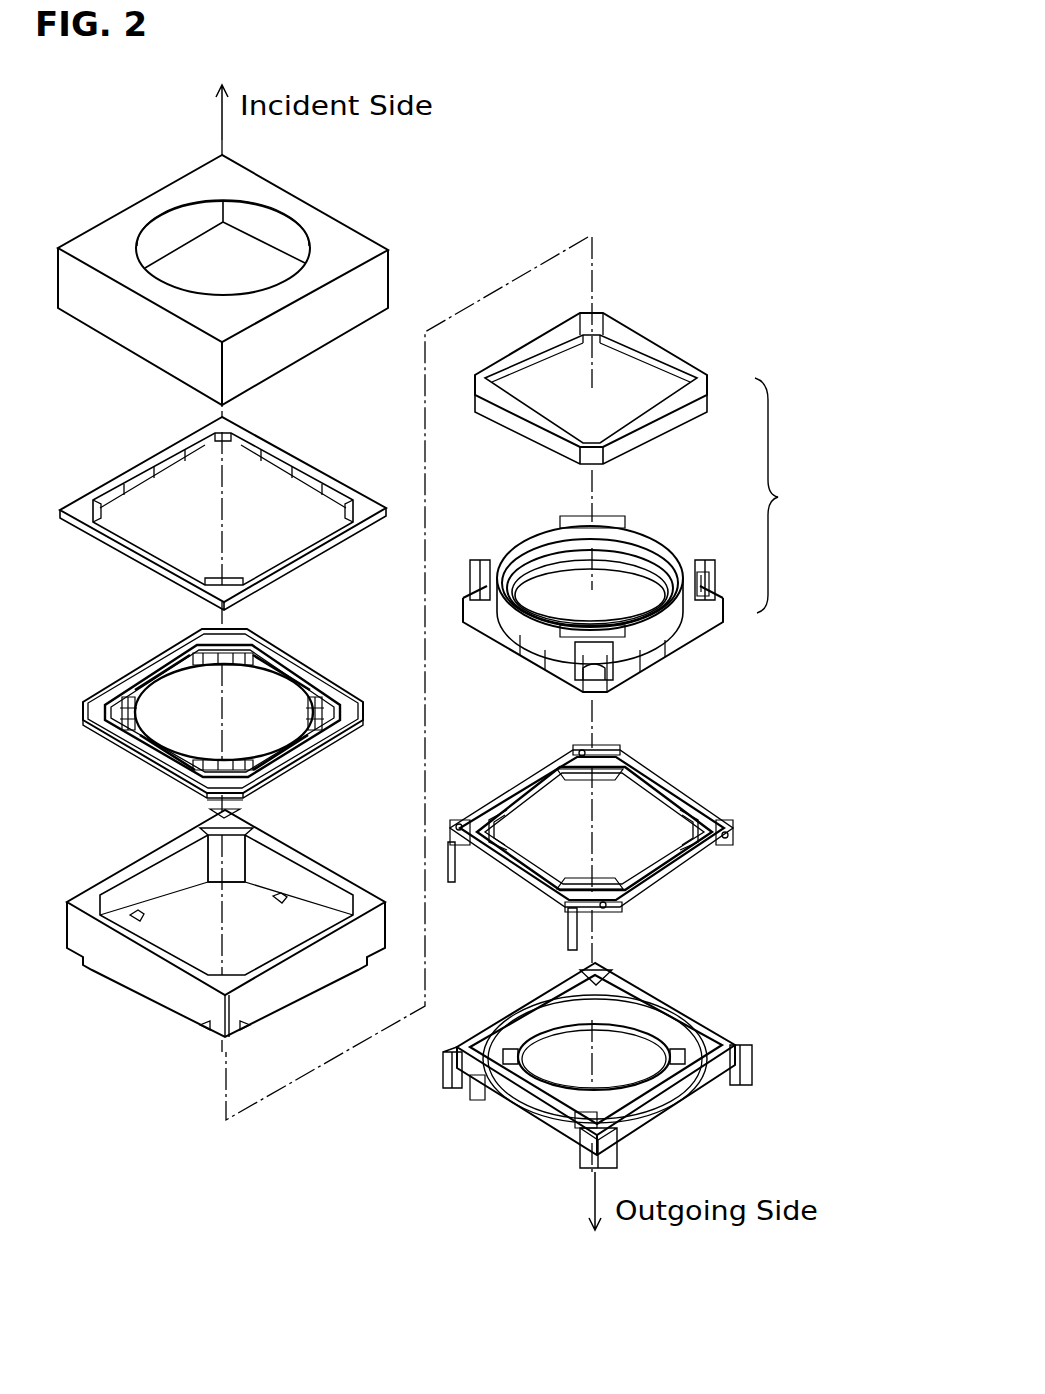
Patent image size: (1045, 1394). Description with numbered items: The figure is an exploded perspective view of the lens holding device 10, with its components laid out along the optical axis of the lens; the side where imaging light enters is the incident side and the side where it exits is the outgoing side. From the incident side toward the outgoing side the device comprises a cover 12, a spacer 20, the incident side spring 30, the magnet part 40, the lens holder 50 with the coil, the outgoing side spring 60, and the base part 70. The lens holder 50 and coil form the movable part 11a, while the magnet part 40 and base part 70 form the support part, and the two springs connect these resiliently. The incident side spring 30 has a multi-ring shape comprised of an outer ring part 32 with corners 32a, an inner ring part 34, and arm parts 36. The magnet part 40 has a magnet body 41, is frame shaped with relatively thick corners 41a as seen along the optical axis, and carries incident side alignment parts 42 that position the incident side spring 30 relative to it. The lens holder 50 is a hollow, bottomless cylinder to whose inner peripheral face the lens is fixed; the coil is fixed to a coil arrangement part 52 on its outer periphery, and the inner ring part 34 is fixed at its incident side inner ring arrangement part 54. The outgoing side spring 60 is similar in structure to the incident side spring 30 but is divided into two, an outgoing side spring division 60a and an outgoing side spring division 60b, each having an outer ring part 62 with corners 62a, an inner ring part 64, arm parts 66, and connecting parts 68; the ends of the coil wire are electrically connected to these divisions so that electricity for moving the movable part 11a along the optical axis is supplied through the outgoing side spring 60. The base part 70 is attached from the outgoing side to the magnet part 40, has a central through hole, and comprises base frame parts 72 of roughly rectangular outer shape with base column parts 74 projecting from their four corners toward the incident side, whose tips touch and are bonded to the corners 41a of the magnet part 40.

The lens holding device 10 is at (428, 216).
The movable part 11a is at (792, 495).
The cover 12 is at (358, 222).
The spacer 20 is at (310, 450).
The incident side spring 30 is at (225, 701).
The outer ring part 32 is at (300, 665).
The outer ring part corner 32a is at (365, 712).
The inner ring part 34 is at (180, 664).
The arm parts 36 is at (100, 712).
The magnet part 40 is at (227, 907).
The magnet body 41 is at (310, 975).
The corners 41a is at (72, 933).
The incident side alignment parts 42 is at (245, 833).
The lens holder 50 is at (603, 589).
The coil arrangement part 52 is at (610, 688).
The incident side inner ring arrangement part 54 is at (690, 560).
The outgoing side spring 60 is at (619, 835).
The outgoing side spring division 60a is at (720, 805).
The outgoing side spring division 60b is at (480, 785).
The outer ring part 62 is at (705, 868).
The outer ring part corner 62a is at (735, 845).
The inner ring part 64 is at (505, 812).
The arm parts 66 is at (540, 785).
The connecting parts 68 is at (570, 928).
The base part 70 is at (616, 1050).
The base frame parts 72 is at (680, 1110).
The base column parts 74 is at (458, 1047).